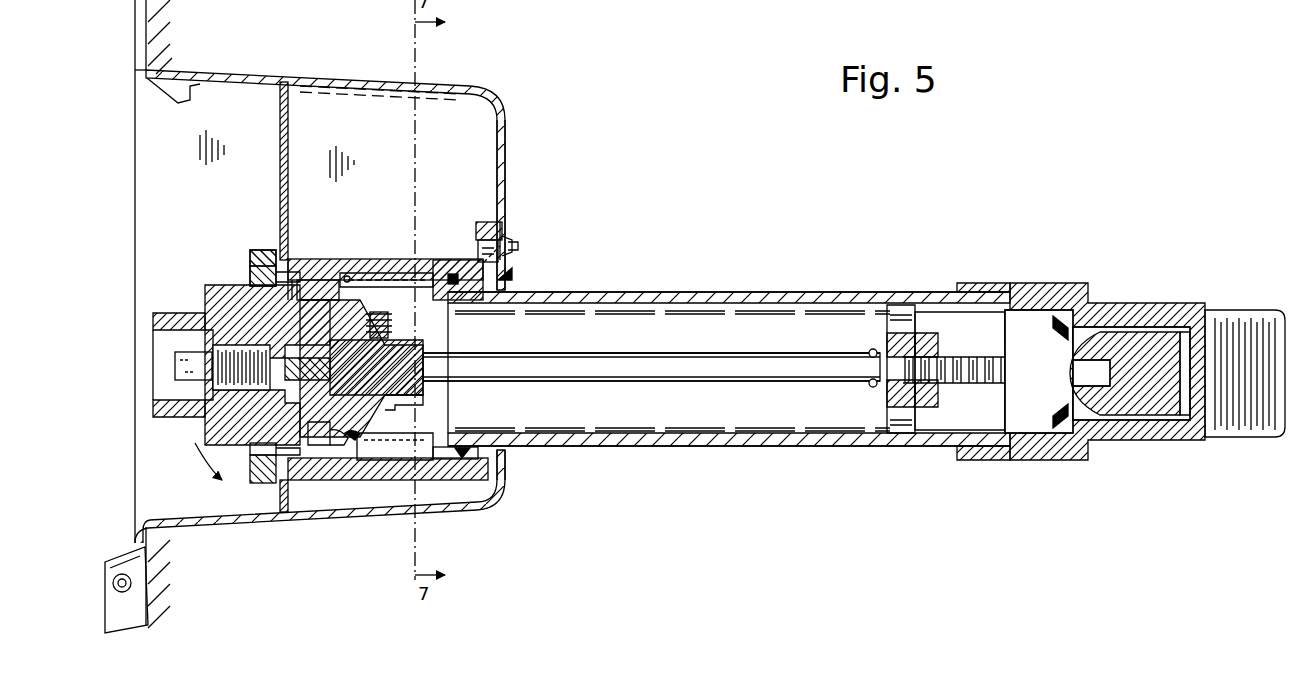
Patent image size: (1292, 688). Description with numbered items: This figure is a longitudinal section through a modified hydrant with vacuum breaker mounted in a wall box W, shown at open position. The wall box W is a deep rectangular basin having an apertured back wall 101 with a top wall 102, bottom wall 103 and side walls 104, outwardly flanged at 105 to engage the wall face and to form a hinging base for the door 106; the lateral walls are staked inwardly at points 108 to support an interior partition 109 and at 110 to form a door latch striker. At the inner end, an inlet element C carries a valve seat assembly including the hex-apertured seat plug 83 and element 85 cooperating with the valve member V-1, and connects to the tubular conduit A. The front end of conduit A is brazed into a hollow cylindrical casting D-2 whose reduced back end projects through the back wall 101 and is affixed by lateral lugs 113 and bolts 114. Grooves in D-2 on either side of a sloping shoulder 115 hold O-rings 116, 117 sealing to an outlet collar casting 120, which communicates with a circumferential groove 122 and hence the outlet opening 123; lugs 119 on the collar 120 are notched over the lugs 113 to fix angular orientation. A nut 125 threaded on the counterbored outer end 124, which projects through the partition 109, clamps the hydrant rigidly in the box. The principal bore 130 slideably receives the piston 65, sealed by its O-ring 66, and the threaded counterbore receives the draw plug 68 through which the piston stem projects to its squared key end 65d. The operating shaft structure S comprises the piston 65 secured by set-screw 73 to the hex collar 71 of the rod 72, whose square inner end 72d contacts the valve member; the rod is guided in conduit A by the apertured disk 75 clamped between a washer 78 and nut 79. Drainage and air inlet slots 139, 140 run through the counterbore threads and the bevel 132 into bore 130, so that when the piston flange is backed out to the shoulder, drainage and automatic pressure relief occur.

The wall box W is at (250, 70).
The outward flange 105 is at (148, 28).
The door 106 is at (130, 628).
The top wall 102 is at (398, 80).
The back wall 101 is at (506, 138).
The striker 110 is at (190, 98).
The side wall 104 is at (400, 135).
The interior partition 109 is at (278, 132).
The staked points 108 is at (300, 94).
The bottom wall 103 is at (424, 516).
The outlet collar casting 120 is at (498, 506).
The O-ring 117 is at (310, 266).
The counterbored outer end 124 is at (294, 268).
The sloping shoulder 115 is at (352, 270).
The circumferential groove 122 is at (394, 272).
The O-ring 116 is at (462, 262).
The ears or lugs 119 is at (486, 262).
The lateral lugs 113 is at (486, 222).
The bolts 114 is at (506, 222).
The cylindrical casting D-2 is at (516, 276).
The O-ring 66 is at (342, 468).
The drainage and air inlet slot 139 is at (302, 468).
The outlet opening 123 is at (426, 466).
The bevel 132 is at (344, 426).
The squared end 65d is at (182, 352).
The draw plug 68 is at (204, 290).
The drainage and air inlet slot 140 is at (250, 274).
The nut 125 is at (256, 252).
The hex collar 71 is at (408, 341).
The set-screw 73 is at (390, 316).
The piston 65 is at (400, 410).
The principal bore 130 is at (436, 442).
The tubular conduit A is at (750, 290).
The valve operating shaft structure S is at (622, 350).
The valve operating rod 72 is at (758, 318).
The washer 78 is at (868, 350).
The disk 75 is at (888, 332).
The nut 79 is at (920, 342).
The inner end 72d is at (1050, 388).
The seat plug 83 is at (1032, 310).
The inlet element C is at (1070, 285).
The valve seat assembly element 85 is at (1080, 326).
The valve member V-1 is at (1130, 332).